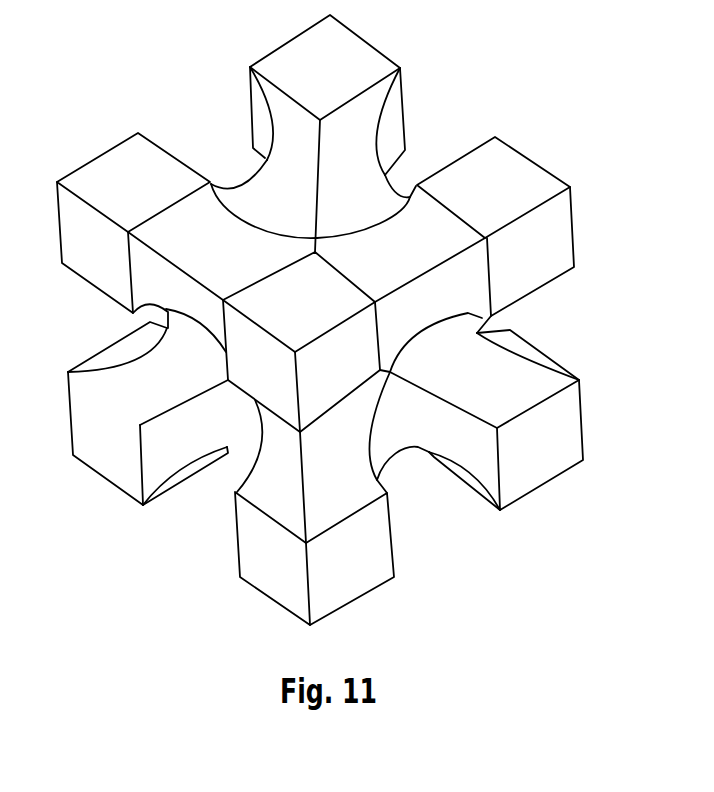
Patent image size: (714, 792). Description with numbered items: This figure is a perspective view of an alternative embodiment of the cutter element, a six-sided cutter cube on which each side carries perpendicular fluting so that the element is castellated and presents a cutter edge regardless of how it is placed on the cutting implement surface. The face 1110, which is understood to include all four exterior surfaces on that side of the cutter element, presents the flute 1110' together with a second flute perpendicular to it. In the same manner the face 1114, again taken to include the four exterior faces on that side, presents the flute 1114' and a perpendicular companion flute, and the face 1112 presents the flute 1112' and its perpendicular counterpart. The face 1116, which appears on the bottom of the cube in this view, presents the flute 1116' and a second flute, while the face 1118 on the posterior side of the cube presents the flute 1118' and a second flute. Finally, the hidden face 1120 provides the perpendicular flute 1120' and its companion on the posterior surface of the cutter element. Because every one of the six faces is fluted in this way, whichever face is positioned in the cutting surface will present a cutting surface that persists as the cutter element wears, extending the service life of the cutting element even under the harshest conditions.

The face 1110 is at (272, 528).
The flute 1110' is at (202, 452).
The face 1112 is at (350, 559).
The flute 1112' is at (434, 441).
The face 1114 is at (382, 107).
The flute 1114' is at (366, 153).
The face 1116 is at (553, 451).
The flute 1116' is at (185, 492).
The face 1118 is at (516, 235).
The flute 1118' is at (429, 121).
The hidden face 1120 is at (129, 219).
The flute 1120' is at (103, 350).